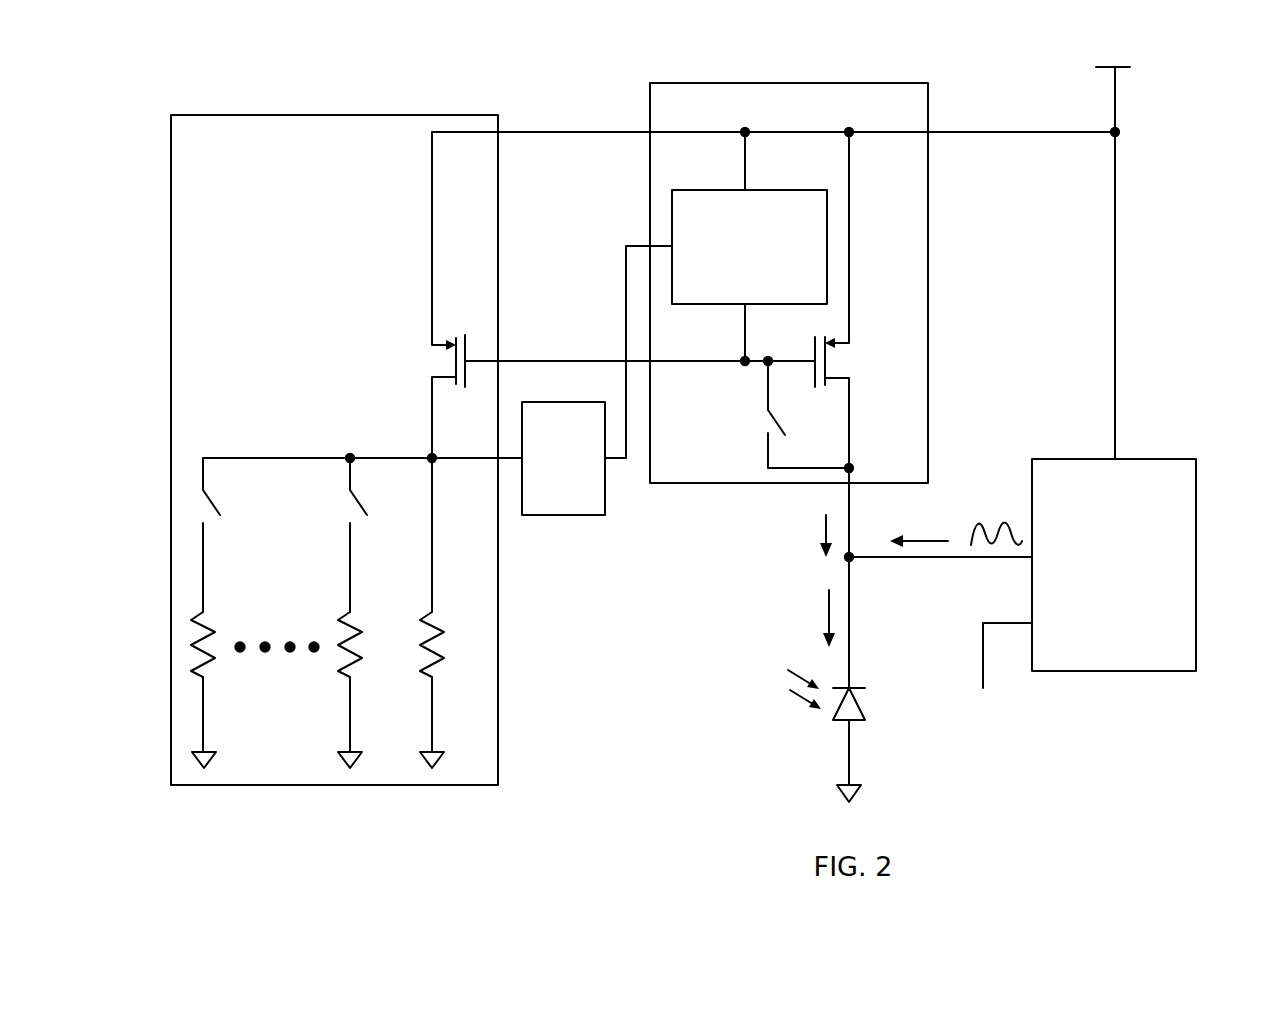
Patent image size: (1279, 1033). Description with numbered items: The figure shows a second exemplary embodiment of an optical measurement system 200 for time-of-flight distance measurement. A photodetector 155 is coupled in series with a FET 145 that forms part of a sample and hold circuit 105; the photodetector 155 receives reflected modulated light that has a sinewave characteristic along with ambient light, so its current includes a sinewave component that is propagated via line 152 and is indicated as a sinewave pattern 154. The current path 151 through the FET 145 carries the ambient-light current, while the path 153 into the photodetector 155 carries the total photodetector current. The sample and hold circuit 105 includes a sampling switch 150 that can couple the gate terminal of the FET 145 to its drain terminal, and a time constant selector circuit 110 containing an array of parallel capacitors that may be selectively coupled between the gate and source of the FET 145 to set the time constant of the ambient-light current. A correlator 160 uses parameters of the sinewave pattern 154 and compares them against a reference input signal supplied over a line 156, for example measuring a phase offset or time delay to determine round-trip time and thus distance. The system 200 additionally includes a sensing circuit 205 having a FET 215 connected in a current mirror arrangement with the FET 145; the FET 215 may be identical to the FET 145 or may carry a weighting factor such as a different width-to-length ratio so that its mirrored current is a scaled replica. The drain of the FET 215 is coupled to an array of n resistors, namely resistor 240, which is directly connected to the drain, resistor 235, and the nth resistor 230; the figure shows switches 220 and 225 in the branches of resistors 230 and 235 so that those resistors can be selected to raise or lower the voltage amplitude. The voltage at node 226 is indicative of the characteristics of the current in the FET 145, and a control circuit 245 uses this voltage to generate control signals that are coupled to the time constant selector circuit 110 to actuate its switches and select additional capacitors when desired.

The optical measurement system 200 is at (1205, 200).
The sensing circuit 205 is at (411, 151).
The sample and hold circuit 105 is at (914, 110).
The time constant selector circuit 110 is at (808, 216).
The control circuit 245 is at (596, 430).
The FET 215 is at (403, 352).
The FET 145 is at (875, 352).
The sampling switch 150 is at (743, 428).
The switch 220 is at (237, 505).
The switch 225 is at (387, 505).
The node 226 is at (455, 472).
The resistor 230 is at (233, 625).
The resistor 235 is at (385, 625).
The resistor 240 is at (465, 625).
The ambient light current path 151 is at (852, 528).
The line 152 is at (882, 557).
The photodiode current path 153 is at (850, 598).
The sinewave pattern 154 is at (997, 512).
The photodetector 155 is at (883, 709).
The line 156 is at (983, 657).
The correlator 160 is at (1148, 457).